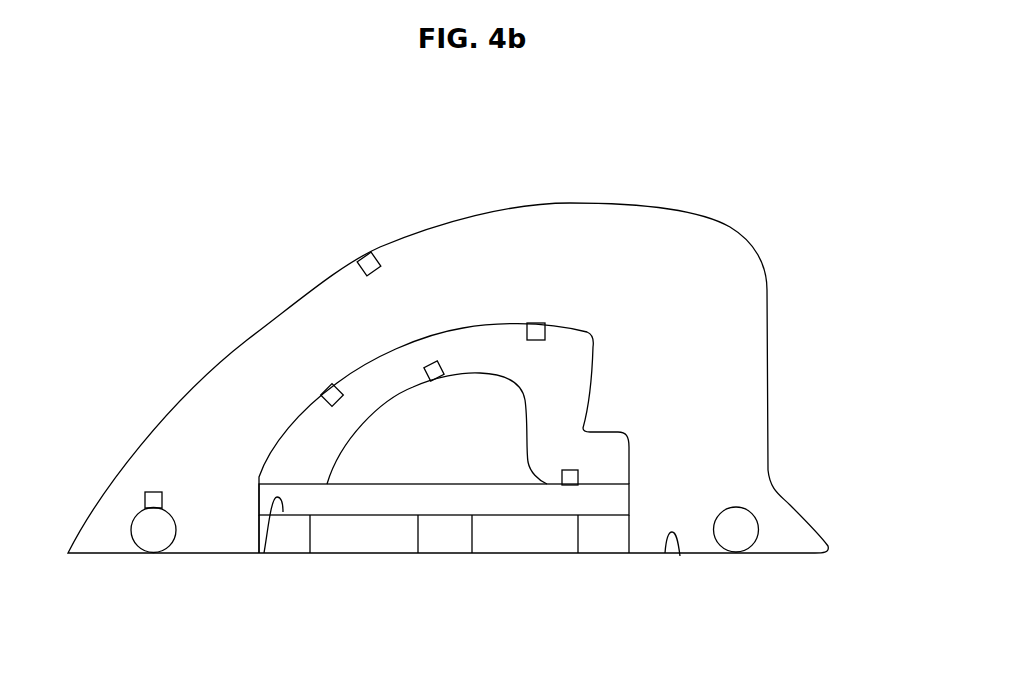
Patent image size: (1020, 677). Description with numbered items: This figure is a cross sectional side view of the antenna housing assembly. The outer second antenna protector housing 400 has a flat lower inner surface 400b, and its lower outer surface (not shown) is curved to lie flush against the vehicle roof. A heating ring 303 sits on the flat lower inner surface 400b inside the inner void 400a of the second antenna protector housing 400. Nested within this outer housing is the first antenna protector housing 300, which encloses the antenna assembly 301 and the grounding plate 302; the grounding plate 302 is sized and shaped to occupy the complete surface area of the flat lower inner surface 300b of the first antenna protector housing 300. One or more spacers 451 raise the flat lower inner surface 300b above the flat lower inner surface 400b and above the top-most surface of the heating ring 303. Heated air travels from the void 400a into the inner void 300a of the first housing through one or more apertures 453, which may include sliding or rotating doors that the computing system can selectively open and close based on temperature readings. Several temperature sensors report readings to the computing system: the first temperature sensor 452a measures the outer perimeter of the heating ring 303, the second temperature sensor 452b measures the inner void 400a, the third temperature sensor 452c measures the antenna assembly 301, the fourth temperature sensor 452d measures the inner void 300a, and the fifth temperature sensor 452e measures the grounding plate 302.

The second antenna protector housing 400 is at (638, 198).
The inner void of the second antenna protector housing 400a is at (703, 336).
The flat lower inner surface of the second antenna protector housing 400b is at (680, 556).
The first antenna protector housing 300 is at (568, 318).
The inner void of the first antenna protector housing 300a is at (553, 370).
The flat lower inner surface of the first antenna protector housing 300b is at (264, 553).
The antenna assembly 301 is at (437, 428).
The grounding plate 302 is at (634, 502).
The heating ring 303 is at (180, 530).
The spacers 451 is at (600, 542).
The first temperature sensor 452a is at (152, 492).
The second temperature sensor 452b is at (366, 256).
The third temperature sensor 452c is at (430, 364).
The fourth temperature sensor 452d is at (537, 323).
The fifth temperature sensor 452e is at (570, 470).
The apertures 453 is at (325, 388).